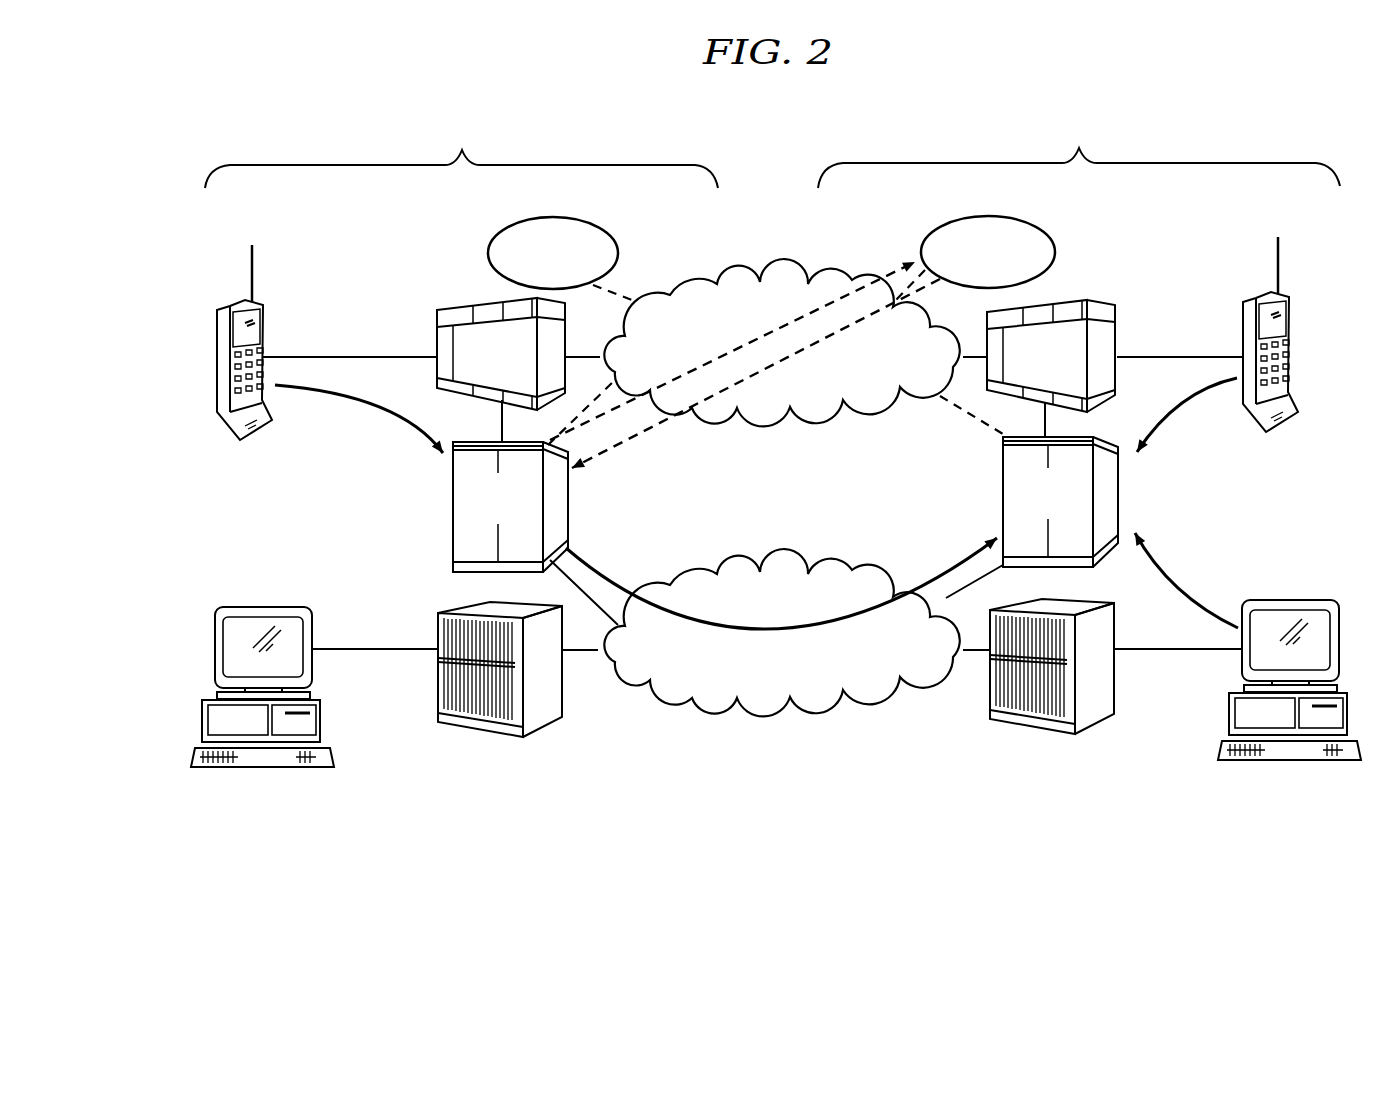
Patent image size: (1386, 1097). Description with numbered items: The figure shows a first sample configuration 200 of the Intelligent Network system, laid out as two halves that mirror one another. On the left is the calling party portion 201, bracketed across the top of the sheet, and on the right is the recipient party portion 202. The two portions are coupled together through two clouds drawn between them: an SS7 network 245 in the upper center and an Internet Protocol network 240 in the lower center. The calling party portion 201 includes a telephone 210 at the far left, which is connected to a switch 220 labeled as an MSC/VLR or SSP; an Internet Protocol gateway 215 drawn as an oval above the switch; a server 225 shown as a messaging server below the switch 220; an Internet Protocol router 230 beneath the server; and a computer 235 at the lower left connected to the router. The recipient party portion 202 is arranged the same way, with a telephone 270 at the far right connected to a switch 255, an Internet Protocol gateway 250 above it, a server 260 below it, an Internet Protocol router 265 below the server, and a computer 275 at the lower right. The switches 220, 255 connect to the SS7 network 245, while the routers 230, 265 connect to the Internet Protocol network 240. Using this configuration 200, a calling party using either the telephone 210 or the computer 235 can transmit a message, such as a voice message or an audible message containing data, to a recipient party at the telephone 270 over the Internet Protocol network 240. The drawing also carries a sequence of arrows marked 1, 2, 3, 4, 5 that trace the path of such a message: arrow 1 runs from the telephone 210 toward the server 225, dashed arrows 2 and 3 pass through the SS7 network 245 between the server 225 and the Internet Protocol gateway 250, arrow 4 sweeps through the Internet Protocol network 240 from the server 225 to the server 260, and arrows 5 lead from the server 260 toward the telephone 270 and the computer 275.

The first sample configuration 200 is at (977, 82).
The calling party portion 201 is at (461, 154).
The recipient party portion 202 is at (1079, 154).
The telephone 210 is at (218, 333).
The Internet Protocol gateway 215 is at (508, 226).
The switch 220 is at (467, 308).
The server 225 is at (558, 503).
The Internet Protocol router 230 is at (450, 722).
The computer 235 is at (215, 633).
The Internet Protocol network 240 is at (772, 550).
The SS7 network 245 is at (772, 262).
The Internet Protocol gateway 250 is at (1057, 247).
The switch 255 is at (1113, 333).
The server 260 is at (1003, 483).
The Internet Protocol router 265 is at (1015, 723).
The telephone 270 is at (1293, 300).
The computer 275 is at (1337, 609).
The message flow step 1 is at (360, 408).
The message flow step 2 is at (885, 273).
The message flow step 3 is at (660, 430).
The message flow step 4 is at (857, 628).
The message flow step 5 is at (1178, 588).